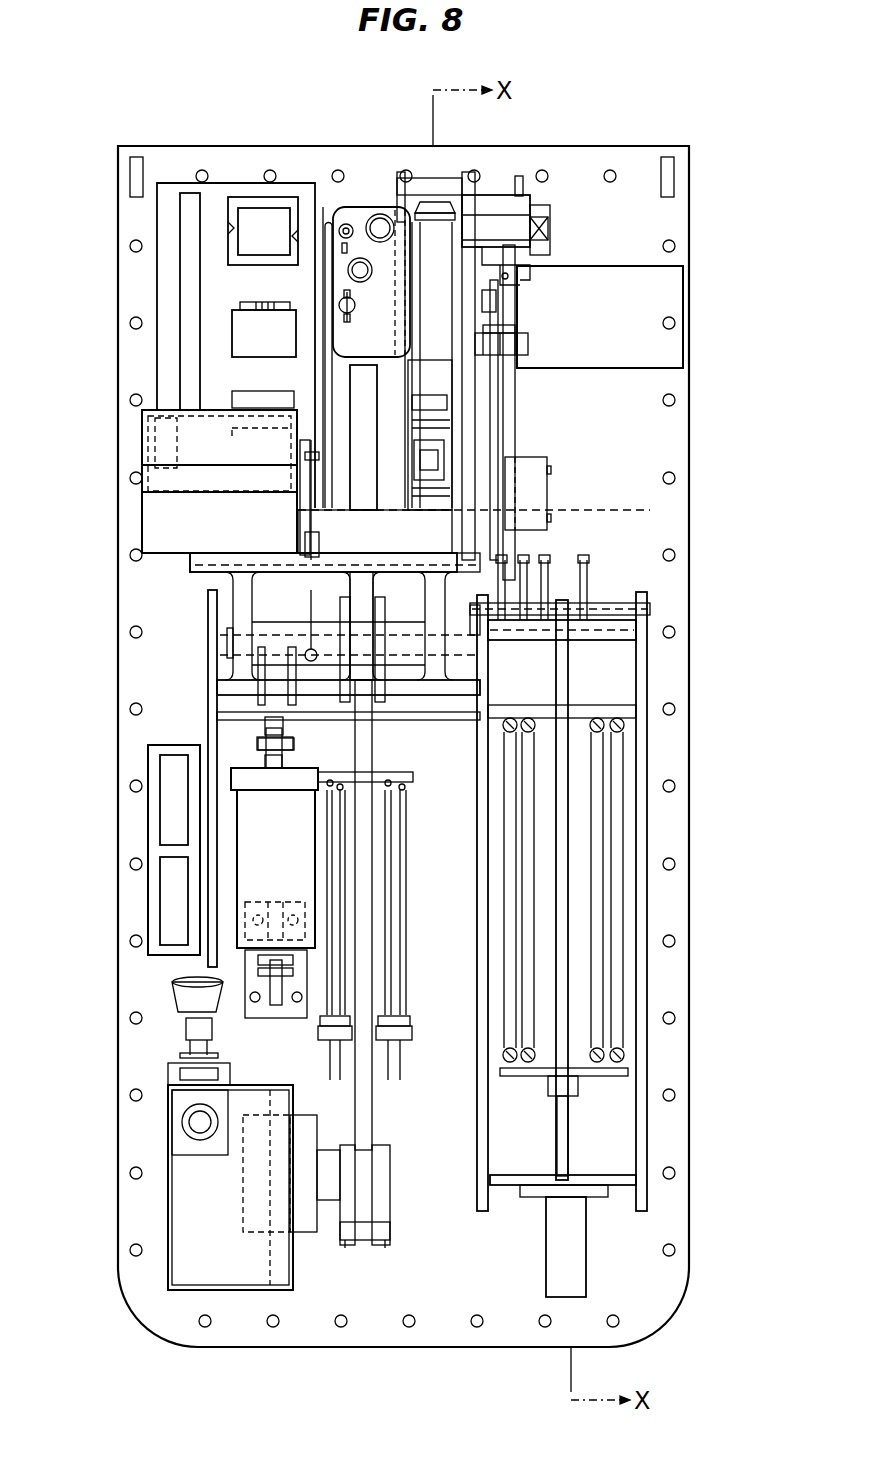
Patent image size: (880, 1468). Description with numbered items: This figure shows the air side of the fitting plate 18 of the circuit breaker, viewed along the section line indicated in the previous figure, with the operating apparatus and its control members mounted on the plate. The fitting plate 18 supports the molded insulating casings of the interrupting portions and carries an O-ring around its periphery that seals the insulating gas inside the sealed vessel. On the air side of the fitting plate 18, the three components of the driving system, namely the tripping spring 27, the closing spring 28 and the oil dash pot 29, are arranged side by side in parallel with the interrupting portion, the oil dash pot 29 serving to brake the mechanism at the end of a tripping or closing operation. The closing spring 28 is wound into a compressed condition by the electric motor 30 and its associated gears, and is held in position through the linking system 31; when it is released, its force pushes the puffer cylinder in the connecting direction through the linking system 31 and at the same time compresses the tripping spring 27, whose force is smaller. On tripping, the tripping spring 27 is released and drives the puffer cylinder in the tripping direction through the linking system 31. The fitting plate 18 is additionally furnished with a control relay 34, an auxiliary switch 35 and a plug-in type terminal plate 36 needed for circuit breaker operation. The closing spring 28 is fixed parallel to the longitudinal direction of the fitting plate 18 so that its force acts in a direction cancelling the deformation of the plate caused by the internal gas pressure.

The fitting plate 18 is at (689, 433).
The tripping spring 27 is at (327, 968).
The closing spring 28 is at (628, 908).
The oil dash pot 29 is at (237, 893).
The electric motor 30 is at (689, 302).
The linking system 31 is at (358, 440).
The control relay 34 is at (248, 232).
The auxiliary switch 35 is at (142, 528).
The plug-in type terminal plate 36 is at (167, 768).